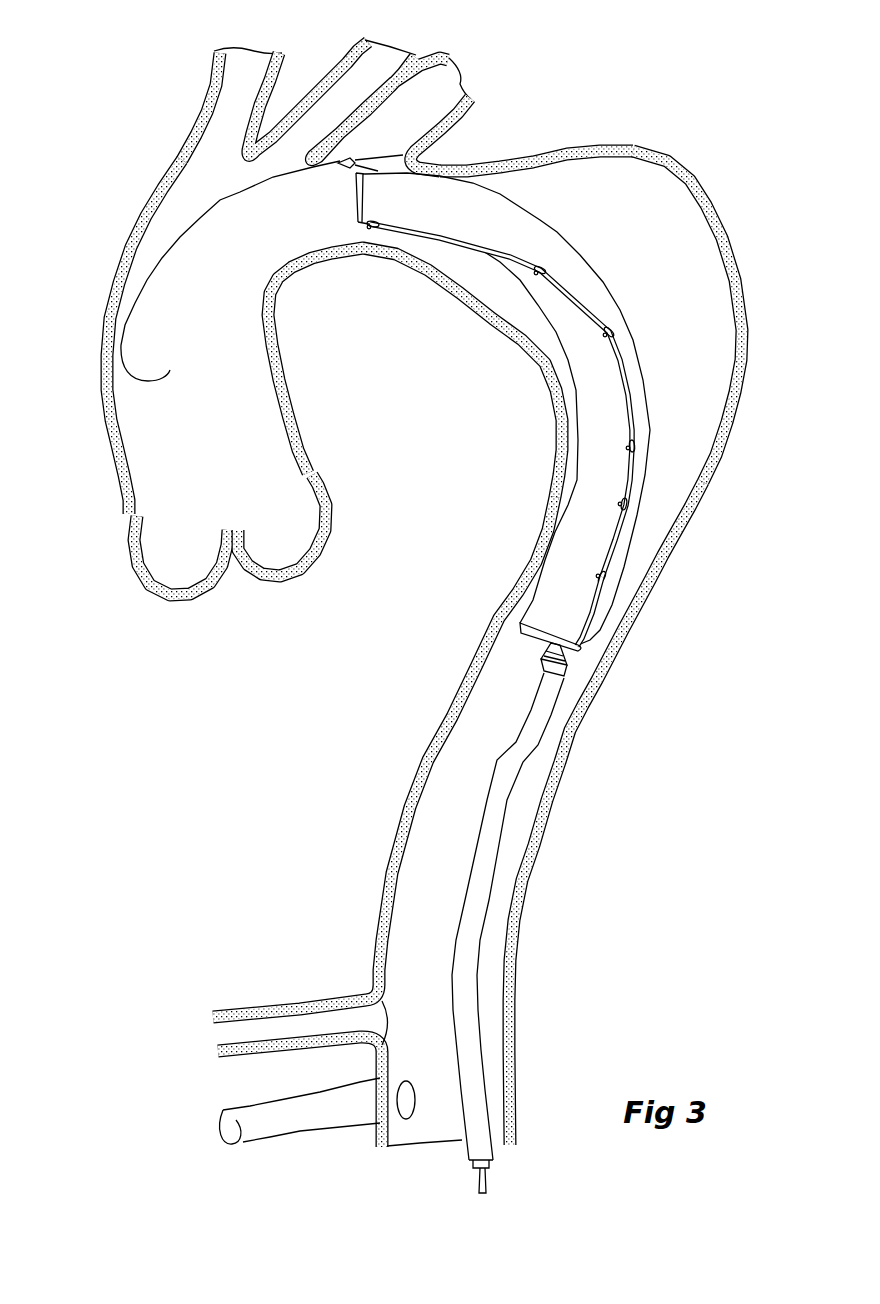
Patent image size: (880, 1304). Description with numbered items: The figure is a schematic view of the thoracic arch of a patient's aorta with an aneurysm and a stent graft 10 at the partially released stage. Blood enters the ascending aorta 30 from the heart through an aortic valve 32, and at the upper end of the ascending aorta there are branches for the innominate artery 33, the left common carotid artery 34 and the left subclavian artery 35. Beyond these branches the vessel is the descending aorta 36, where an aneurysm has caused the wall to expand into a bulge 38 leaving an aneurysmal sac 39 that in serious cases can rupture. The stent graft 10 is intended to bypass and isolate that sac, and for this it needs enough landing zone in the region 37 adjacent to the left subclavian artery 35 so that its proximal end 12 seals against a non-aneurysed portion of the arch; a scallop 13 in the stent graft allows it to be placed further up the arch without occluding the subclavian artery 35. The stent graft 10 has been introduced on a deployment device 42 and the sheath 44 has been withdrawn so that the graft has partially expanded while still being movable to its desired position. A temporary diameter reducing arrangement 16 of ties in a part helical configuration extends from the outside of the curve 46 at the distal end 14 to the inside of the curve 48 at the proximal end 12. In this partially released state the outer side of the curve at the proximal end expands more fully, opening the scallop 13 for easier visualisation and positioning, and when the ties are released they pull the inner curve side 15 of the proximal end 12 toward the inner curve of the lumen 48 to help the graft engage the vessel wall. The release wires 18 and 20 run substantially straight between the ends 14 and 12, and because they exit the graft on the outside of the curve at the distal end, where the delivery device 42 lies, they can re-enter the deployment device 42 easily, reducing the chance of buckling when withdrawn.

The stent graft 10 is at (531, 418).
The proximal end 12 is at (357, 221).
The scallop 13 is at (419, 153).
The distal end 14 is at (527, 636).
The inner curve side 15 is at (405, 230).
The temporary diameter reducing arrangement 16 is at (480, 255).
The release wire 18 is at (597, 610).
The release wire 20 is at (573, 655).
The ascending aorta 30 is at (172, 390).
The aortic valve 32 is at (233, 547).
The innominate artery 33 is at (215, 105).
The left common carotid artery 34 is at (350, 71).
The left subclavian artery 35 is at (447, 92).
The descending aorta 36 is at (523, 343).
The landing zone region 37 is at (422, 168).
The bulge 38 is at (730, 245).
The aneurysmal sac 39 is at (650, 272).
The deployment device 42 is at (479, 797).
The sheath 44 is at (503, 793).
The outside of the curve 46 is at (632, 640).
The inside of the curve 48 is at (404, 264).